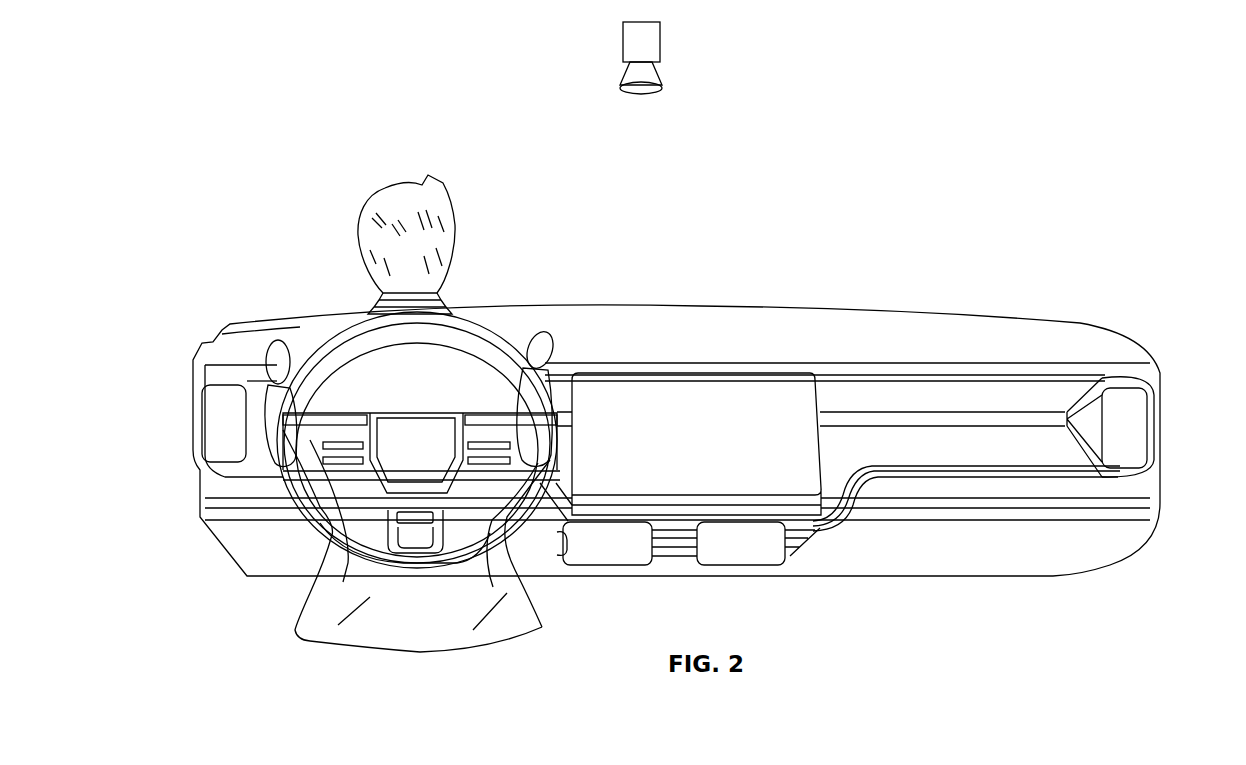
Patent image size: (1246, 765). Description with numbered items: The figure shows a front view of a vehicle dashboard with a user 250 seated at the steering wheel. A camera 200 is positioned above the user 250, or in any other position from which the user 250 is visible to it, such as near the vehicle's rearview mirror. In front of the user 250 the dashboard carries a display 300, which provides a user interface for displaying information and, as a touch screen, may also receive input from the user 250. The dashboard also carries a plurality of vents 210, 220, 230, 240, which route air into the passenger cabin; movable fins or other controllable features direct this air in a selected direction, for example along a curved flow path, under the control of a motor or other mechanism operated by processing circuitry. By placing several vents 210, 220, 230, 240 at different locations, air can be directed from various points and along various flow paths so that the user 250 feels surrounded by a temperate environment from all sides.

The camera 200 is at (660, 38).
The vent 210 is at (220, 423).
The vent 220 is at (610, 540).
The vent 230 is at (740, 540).
The vent 240 is at (1130, 425).
The user 250 is at (383, 190).
The display 300 is at (647, 408).